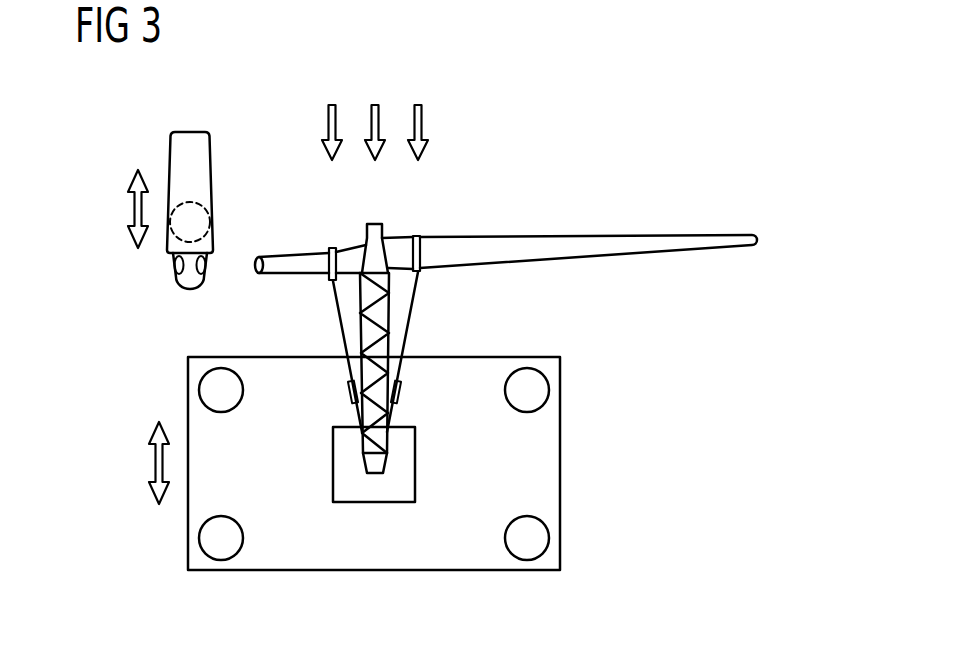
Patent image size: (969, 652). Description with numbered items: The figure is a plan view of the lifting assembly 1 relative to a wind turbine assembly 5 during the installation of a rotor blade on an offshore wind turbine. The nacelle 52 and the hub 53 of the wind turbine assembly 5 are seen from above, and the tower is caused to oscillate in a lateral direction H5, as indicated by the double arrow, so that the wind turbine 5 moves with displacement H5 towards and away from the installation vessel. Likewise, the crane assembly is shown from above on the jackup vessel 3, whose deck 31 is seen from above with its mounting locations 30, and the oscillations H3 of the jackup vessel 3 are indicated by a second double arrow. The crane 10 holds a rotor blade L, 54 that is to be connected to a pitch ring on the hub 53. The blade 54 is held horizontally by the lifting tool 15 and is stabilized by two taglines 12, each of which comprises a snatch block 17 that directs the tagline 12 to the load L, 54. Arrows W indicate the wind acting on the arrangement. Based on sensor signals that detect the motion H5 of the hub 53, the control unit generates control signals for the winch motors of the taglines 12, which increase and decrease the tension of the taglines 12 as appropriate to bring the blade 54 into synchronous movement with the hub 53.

The lifting assembly 1 is at (506, 202).
The jackup vessel 3 is at (354, 446).
The wind turbine assembly 5 is at (156, 203).
The crane 10 is at (373, 233).
The taglines 12 is at (333, 312).
The lifting tool 15 is at (331, 248).
The snatch block 17 is at (347, 392).
The mounting holes 30 is at (220, 375).
The deck 31 is at (549, 455).
The nacelle 52 is at (200, 141).
The hub 53 is at (185, 282).
The rotor blade 54 is at (529, 245).
The wind direction W is at (374, 110).
The oscillations of the jackup vessel H3 is at (164, 461).
The lateral oscillation of the tower H5 is at (134, 212).